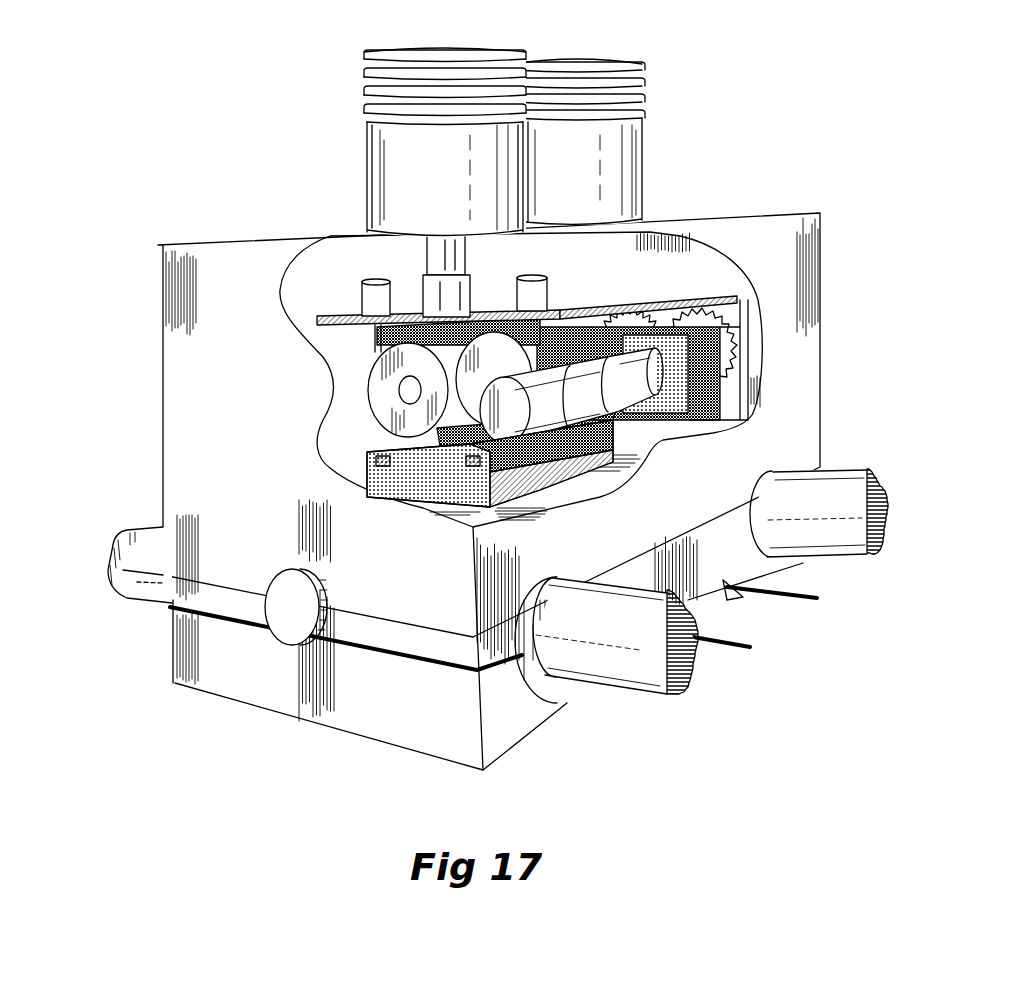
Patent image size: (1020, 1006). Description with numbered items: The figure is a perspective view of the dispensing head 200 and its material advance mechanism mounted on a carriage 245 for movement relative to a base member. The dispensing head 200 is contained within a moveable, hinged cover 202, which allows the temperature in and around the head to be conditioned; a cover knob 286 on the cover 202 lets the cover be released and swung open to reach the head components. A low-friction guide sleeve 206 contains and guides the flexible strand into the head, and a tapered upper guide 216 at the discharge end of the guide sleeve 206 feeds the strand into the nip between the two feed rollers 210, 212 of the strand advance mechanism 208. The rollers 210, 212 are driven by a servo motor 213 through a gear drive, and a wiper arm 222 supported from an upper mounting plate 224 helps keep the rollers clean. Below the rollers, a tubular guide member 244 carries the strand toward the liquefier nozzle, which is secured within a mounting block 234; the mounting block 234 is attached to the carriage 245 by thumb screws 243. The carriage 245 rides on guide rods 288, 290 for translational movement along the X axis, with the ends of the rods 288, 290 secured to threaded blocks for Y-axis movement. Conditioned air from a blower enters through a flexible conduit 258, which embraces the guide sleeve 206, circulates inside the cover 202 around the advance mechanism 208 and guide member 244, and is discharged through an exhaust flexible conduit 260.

The dispensing head 200 is at (745, 294).
The cover 202 is at (821, 214).
The guide sleeve 206 is at (443, 258).
The strand advance mechanism 208 is at (350, 366).
The feed roller 210 is at (382, 390).
The feed roller 212 is at (493, 355).
The servo motor 213 is at (565, 397).
The tapered upper guide 216 is at (443, 332).
The wiper arm 222 is at (557, 320).
The upper mounting plate 224 is at (620, 293).
The mounting block 234 is at (760, 438).
The thumb screws 243 is at (473, 462).
The tubular guide member 244 is at (423, 472).
The carriage 245 is at (293, 697).
The flexible conduit 258 is at (392, 168).
The exhaust flexible conduit 260 is at (617, 165).
The cover knob 286 is at (282, 613).
The guide rod 288 is at (135, 558).
The guide rod 290 is at (832, 535).